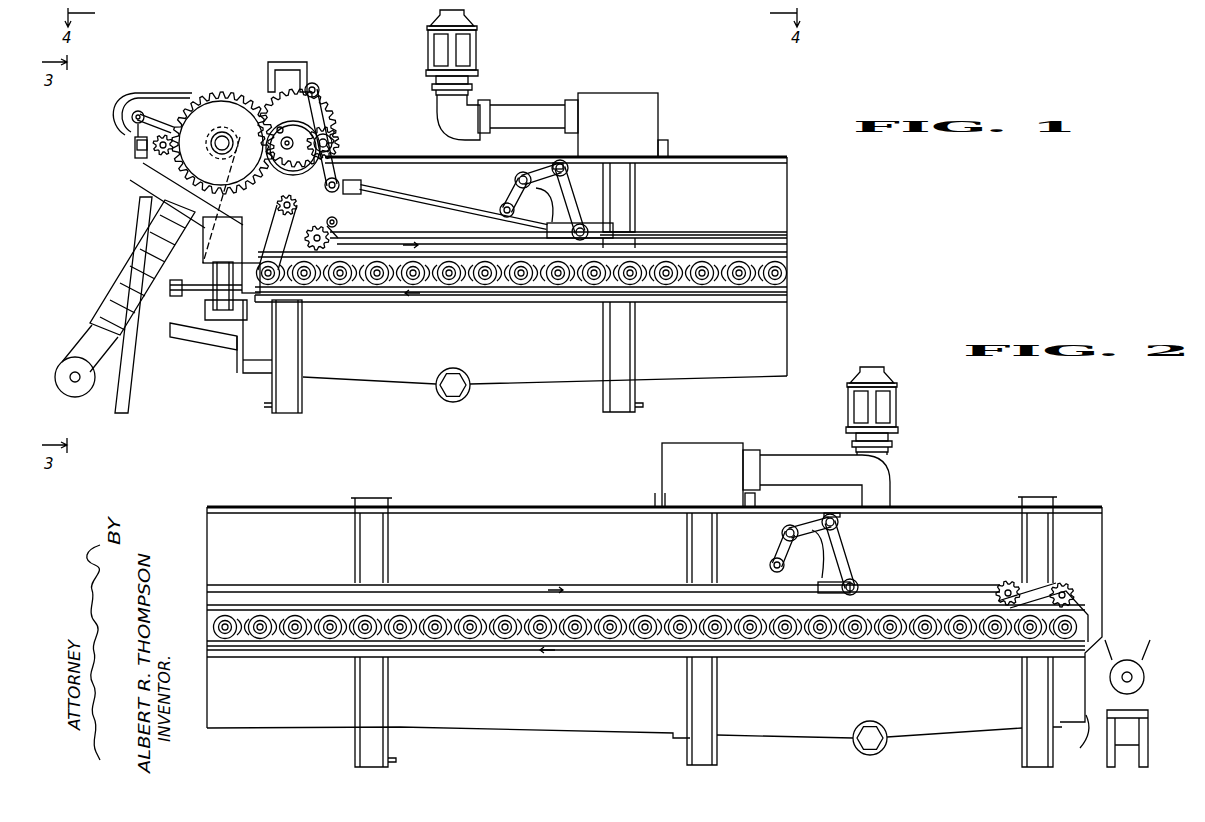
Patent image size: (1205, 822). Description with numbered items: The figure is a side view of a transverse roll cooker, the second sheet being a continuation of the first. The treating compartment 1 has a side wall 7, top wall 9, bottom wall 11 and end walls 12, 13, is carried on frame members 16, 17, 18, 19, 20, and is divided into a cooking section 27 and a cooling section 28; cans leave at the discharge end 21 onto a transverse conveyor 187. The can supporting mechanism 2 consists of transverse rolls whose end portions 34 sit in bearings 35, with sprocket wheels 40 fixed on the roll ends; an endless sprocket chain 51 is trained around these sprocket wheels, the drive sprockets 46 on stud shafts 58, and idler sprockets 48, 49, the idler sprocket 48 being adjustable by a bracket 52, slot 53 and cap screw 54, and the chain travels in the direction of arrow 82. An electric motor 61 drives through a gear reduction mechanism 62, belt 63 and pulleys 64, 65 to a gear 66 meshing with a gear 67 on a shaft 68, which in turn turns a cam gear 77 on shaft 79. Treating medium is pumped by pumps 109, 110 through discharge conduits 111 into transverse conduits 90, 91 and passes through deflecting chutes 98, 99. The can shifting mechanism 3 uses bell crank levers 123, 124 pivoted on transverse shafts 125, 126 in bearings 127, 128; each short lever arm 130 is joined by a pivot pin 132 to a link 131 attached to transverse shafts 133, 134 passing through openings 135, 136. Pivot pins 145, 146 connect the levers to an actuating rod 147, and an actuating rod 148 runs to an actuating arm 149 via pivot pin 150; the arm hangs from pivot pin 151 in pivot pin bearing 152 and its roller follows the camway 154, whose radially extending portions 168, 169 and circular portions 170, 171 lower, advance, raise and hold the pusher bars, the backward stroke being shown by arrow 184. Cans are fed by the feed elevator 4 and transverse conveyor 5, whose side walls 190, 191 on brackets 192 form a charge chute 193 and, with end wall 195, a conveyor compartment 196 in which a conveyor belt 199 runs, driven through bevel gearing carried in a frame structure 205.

In FIG. 1, the treating compartment 1 is at (786, 331).
In FIG. 2, the treating compartment 1 is at (496, 718).
In FIG. 1, the can supporting mechanism 2 is at (480, 301).
In FIG. 2, the can supporting mechanism 2 is at (776, 646).
In FIG. 1, the can shifting mechanism 3 is at (344, 144).
In FIG. 1, the feed elevator 4 is at (120, 218).
In FIG. 1, the transverse conveyor 5 is at (219, 325).
In FIG. 1, the side wall 7 is at (787, 180).
In FIG. 2, the side wall 7 is at (1095, 553).
In FIG. 1, the top wall 9 is at (780, 155).
In FIG. 2, the top wall 9 is at (275, 507).
In FIG. 1, the bottom wall 11 is at (560, 385).
In FIG. 2, the bottom wall 11 is at (580, 730).
In FIG. 1, the end wall 12 is at (250, 372).
In FIG. 2, the end wall 13 is at (1088, 722).
In FIG. 1, the frame member 16 is at (302, 395).
In FIG. 1, the frame member 17 is at (620, 412).
In FIG. 2, the frame member 18 is at (355, 715).
In FIG. 2, the frame member 19 is at (722, 730).
In FIG. 2, the frame member 20 is at (1032, 740).
In FIG. 2, the discharge end 21 is at (1105, 602).
In FIG. 1, the cooking section 27 is at (725, 198).
In FIG. 2, the cooling section 28 is at (642, 558).
In FIG. 1, the end portion of roll 34 is at (322, 300).
In FIG. 2, the end portion of roll 34 is at (275, 605).
In FIG. 1, the bearing 35 is at (450, 243).
In FIG. 2, the bearing 35 is at (668, 605).
In FIG. 1, the sprocket wheel 40 is at (560, 290).
In FIG. 2, the sprocket wheel 40 is at (470, 610).
In FIG. 1, the drive sprocket 46 is at (292, 208).
In FIG. 1, the idler sprocket 48 is at (330, 246).
In FIG. 2, the idler sprocket 49 is at (1000, 590).
In FIG. 1, the endless sprocket chain 51 is at (783, 253).
In FIG. 2, the endless sprocket chain 51 is at (940, 605).
In FIG. 1, the bracket 52 is at (338, 238).
In FIG. 1, the slot 53 is at (330, 224).
In FIG. 1, the cap screw 54 is at (334, 224).
In FIG. 1, the stud shaft 58 is at (260, 205).
In FIG. 1, the electric motor 61 is at (190, 92).
In FIG. 1, the gear reduction mechanism 62 is at (158, 84).
In FIG. 1, the belt 63 is at (133, 137).
In FIG. 1, the pulley 64 is at (145, 114).
In FIG. 1, the pulley 65 is at (150, 158).
In FIG. 1, the gear 66 is at (135, 147).
In FIG. 1, the gear 67 is at (222, 92).
In FIG. 1, the shaft 68 is at (213, 143).
In FIG. 1, the cam gear 77 is at (275, 96).
In FIG. 1, the shaft 79 is at (293, 122).
In FIG. 1, the arrow 82 is at (405, 242).
In FIG. 2, the arrow 82 is at (553, 585).
In FIG. 1, the transverse conduit 90 is at (658, 112).
In FIG. 2, the transverse conduit 91 is at (700, 447).
In FIG. 1, the deflecting chute 98 is at (570, 157).
In FIG. 2, the deflecting chute 98 is at (655, 505).
In FIG. 1, the deflecting chute 99 is at (668, 150).
In FIG. 2, the deflecting chute 99 is at (745, 500).
In FIG. 1, the pump 109 is at (478, 100).
In FIG. 2, the pump 110 is at (898, 458).
In FIG. 1, the discharge conduit 111 is at (510, 110).
In FIG. 2, the discharge conduit 111 is at (800, 465).
In FIG. 1, the bell crank lever 123 is at (572, 196).
In FIG. 2, the bell crank lever 124 is at (848, 562).
In FIG. 1, the transverse shaft 125 is at (568, 166).
In FIG. 2, the transverse shaft 126 is at (840, 523).
In FIG. 1, the bearing 127 is at (557, 160).
In FIG. 2, the bearing 128 is at (830, 513).
In FIG. 1, the short lever arm 130 is at (540, 165).
In FIG. 2, the short lever arm 130 is at (805, 522).
In FIG. 1, the link 131 is at (512, 192).
In FIG. 2, the link 131 is at (780, 538).
In FIG. 1, the pivot pin 132 is at (518, 173).
In FIG. 2, the pivot pin 132 is at (777, 528).
In FIG. 1, the transverse shaft 133 is at (500, 207).
In FIG. 2, the transverse shaft 134 is at (770, 565).
In FIG. 1, the opening 135 is at (545, 222).
In FIG. 2, the opening 136 is at (770, 548).
In FIG. 1, the pivot pin 145 is at (590, 230).
In FIG. 2, the pivot pin 146 is at (860, 588).
In FIG. 1, the actuating rod 147 is at (695, 234).
In FIG. 2, the actuating rod 147 is at (432, 592).
In FIG. 1, the actuating rod 148 is at (430, 200).
In FIG. 1, the actuating arm 149 is at (332, 124).
In FIG. 1, the pivot pin 150 is at (340, 187).
In FIG. 1, the pivot pin 151 is at (318, 88).
In FIG. 1, the pivot pin bearing 152 is at (307, 66).
In FIG. 1, the camway 154 is at (337, 133).
In FIG. 1, the radially extending portion 168 is at (236, 144).
In FIG. 1, the radially extending portion 169 is at (330, 110).
In FIG. 1, the circular portion 170 is at (293, 150).
In FIG. 1, the circular portion 171 is at (278, 130).
In FIG. 1, the arrow 184 is at (318, 158).
In FIG. 2, the transverse conveyor 187 is at (1130, 662).
In FIG. 1, the side wall 190 is at (245, 322).
In FIG. 1, the side wall 191 is at (220, 335).
In FIG. 1, the bracket 192 is at (238, 360).
In FIG. 1, the charge chute 193 is at (262, 298).
In FIG. 1, the end wall 195 is at (232, 236).
In FIG. 1, the conveyor compartment 196 is at (185, 224).
In FIG. 1, the conveyor belt 199 is at (215, 300).
In FIG. 1, the frame structure 205 is at (205, 292).